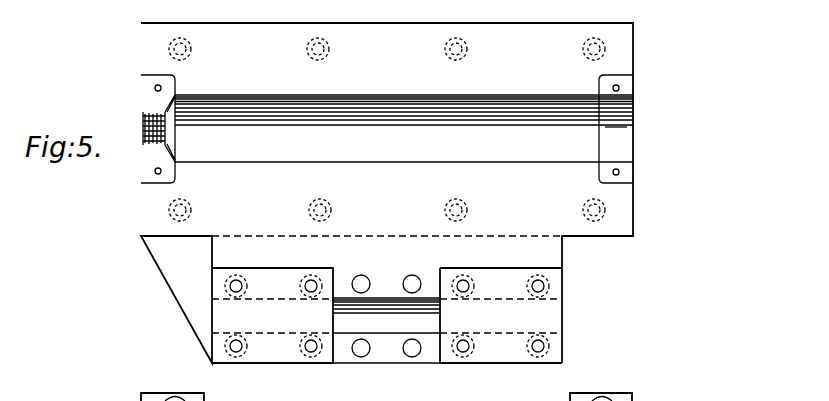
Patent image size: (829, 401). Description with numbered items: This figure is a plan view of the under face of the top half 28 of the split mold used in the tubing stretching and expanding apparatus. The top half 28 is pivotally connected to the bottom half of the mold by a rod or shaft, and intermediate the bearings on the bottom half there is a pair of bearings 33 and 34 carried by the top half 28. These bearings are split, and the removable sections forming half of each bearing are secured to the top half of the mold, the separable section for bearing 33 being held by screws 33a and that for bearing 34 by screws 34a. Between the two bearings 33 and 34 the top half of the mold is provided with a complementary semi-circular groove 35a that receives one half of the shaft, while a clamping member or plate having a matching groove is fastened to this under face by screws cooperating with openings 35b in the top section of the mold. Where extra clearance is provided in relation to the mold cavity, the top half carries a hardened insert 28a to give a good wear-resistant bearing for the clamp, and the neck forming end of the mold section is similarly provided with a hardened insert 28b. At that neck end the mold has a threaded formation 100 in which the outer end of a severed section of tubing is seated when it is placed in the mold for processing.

The top half of the mold 28 is at (627, 50).
The hardened insert 28a is at (627, 165).
The hardened insert 28b is at (148, 163).
The threaded formation 100 is at (143, 128).
The bearing 33 is at (493, 354).
The screws 33a is at (548, 290).
The bearing 34 is at (290, 355).
The screws 34a is at (226, 345).
The semi-circular groove 35a is at (390, 328).
The openings 35b is at (406, 280).